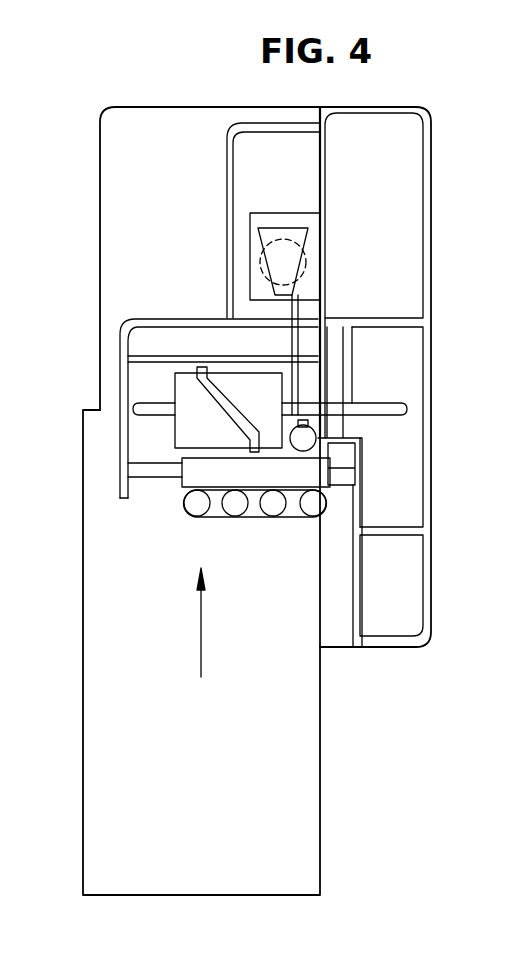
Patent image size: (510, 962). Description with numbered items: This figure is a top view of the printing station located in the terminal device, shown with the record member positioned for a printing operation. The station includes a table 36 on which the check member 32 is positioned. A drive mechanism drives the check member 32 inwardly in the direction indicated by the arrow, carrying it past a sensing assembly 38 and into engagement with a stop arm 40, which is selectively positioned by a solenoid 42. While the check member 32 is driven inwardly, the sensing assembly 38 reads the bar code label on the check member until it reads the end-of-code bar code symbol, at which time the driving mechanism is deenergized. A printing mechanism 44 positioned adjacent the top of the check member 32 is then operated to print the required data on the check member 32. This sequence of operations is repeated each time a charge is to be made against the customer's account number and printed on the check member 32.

The table 36 is at (173, 107).
The solenoid 42 is at (292, 228).
The stop arm 40 is at (292, 341).
The sensing assembly 38 is at (310, 432).
The printing mechanism 44 is at (185, 505).
The check member 32 is at (313, 813).